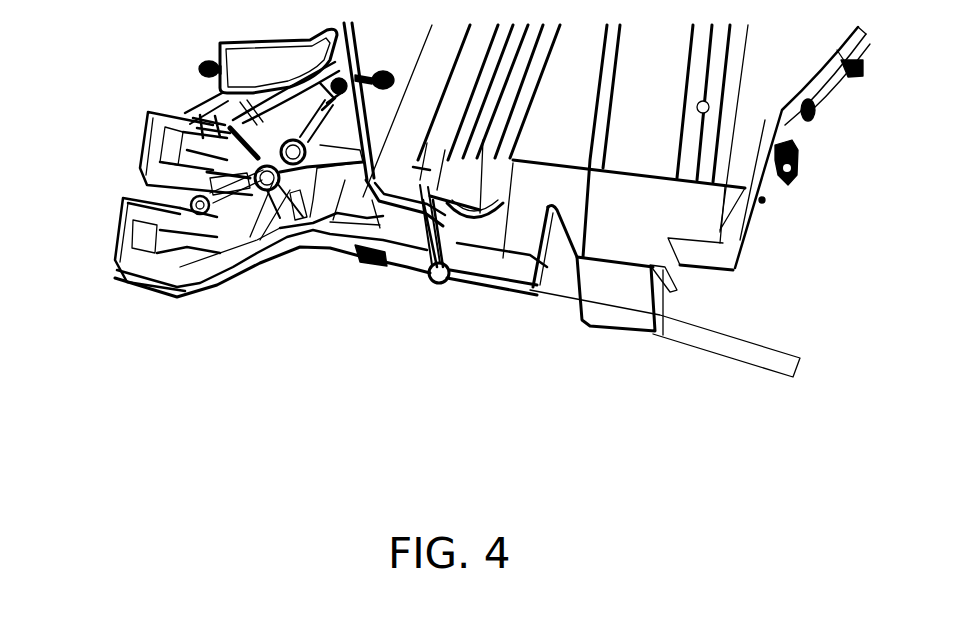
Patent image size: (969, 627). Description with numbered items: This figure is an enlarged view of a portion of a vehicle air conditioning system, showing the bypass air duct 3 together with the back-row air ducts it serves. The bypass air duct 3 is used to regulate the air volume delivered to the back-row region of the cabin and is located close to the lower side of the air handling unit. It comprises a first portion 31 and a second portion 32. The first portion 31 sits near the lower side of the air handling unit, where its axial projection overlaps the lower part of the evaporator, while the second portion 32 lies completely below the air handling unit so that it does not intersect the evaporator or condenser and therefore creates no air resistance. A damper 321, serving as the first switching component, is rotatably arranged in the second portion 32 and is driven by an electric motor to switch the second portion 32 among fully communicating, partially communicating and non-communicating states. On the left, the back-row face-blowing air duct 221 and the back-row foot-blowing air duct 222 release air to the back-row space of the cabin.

The bypass air duct 3 is at (492, 272).
The first portion 31 is at (625, 272).
The second portion 32 is at (353, 262).
The damper 321 is at (415, 277).
The back-row face-blowing air duct 221 is at (143, 158).
The back-row foot-blowing air duct 222 is at (116, 237).